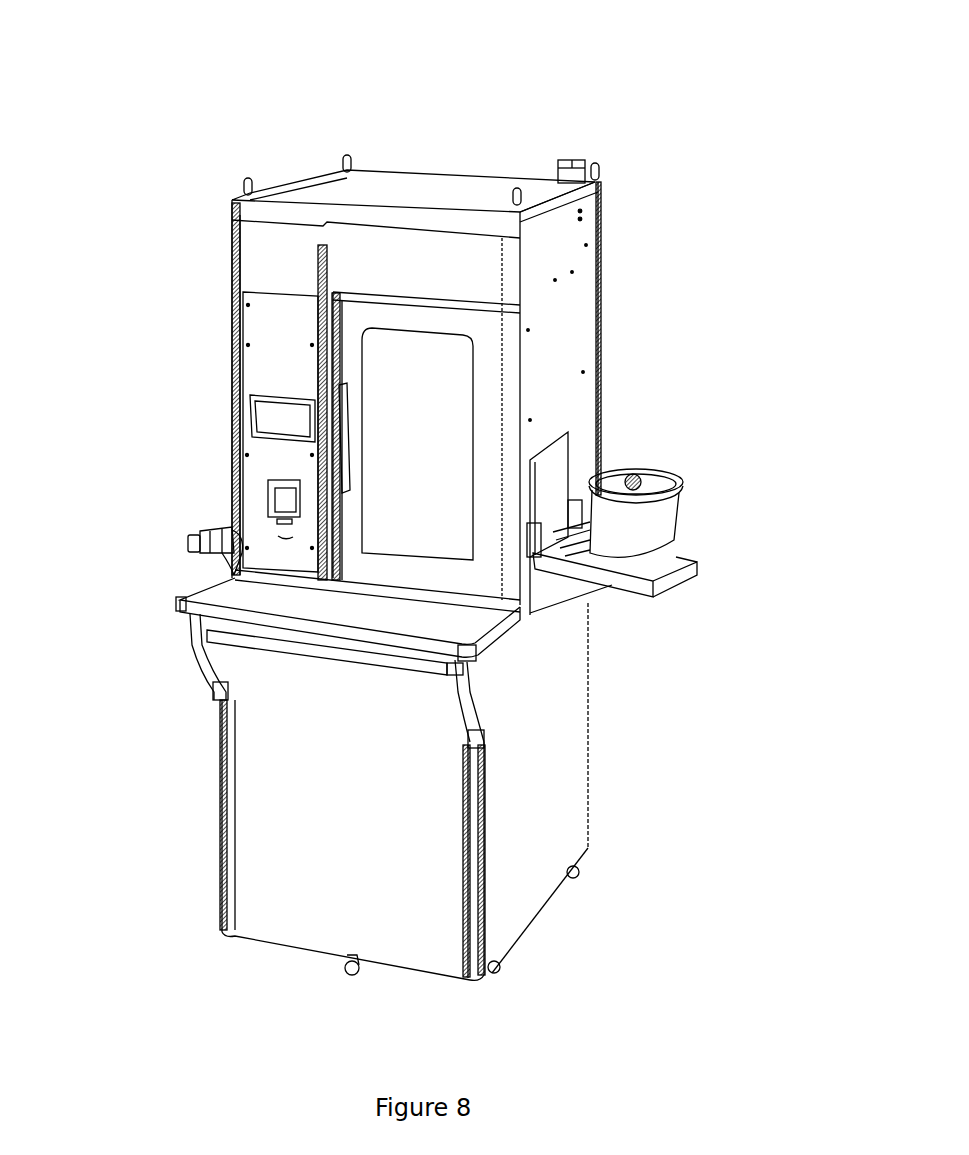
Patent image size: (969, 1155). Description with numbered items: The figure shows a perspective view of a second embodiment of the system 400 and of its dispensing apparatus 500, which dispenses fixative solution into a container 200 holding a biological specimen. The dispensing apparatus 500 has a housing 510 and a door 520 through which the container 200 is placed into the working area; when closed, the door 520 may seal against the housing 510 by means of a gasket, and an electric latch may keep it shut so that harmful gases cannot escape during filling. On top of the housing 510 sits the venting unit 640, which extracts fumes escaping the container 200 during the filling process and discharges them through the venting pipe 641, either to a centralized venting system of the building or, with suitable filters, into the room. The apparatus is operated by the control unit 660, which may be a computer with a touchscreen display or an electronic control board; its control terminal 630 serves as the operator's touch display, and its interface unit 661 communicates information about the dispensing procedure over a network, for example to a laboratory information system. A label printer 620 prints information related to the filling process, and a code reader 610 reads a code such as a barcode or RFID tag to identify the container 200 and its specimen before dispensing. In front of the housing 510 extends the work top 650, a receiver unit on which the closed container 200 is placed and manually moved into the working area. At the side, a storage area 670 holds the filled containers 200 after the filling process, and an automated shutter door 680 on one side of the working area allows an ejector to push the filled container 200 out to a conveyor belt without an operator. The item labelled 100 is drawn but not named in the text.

The system 400 is at (168, 62).
The dispensing apparatus 500 is at (408, 145).
The housing 510 is at (577, 354).
The door 520 is at (487, 575).
The code reader 610 is at (195, 535).
The label printer 620 is at (277, 490).
The control terminal 630 is at (273, 410).
The control unit 660 is at (273, 410).
The interface unit 661 is at (290, 522).
The venting unit 640 is at (545, 149).
The venting pipe 641 is at (572, 160).
The work top 650 is at (417, 610).
The storage area 670 is at (673, 573).
The automated shutter door 680 is at (553, 455).
The container lid 100 is at (654, 469).
The container 200 is at (697, 510).